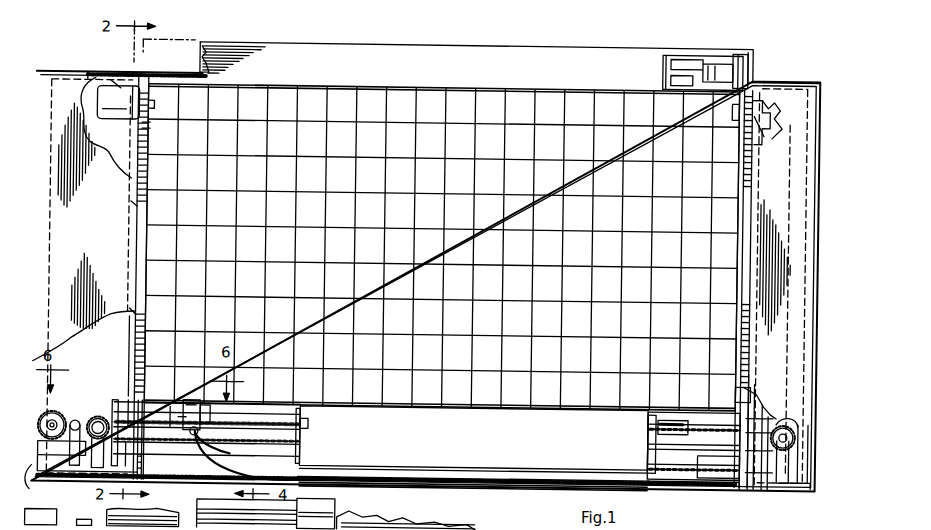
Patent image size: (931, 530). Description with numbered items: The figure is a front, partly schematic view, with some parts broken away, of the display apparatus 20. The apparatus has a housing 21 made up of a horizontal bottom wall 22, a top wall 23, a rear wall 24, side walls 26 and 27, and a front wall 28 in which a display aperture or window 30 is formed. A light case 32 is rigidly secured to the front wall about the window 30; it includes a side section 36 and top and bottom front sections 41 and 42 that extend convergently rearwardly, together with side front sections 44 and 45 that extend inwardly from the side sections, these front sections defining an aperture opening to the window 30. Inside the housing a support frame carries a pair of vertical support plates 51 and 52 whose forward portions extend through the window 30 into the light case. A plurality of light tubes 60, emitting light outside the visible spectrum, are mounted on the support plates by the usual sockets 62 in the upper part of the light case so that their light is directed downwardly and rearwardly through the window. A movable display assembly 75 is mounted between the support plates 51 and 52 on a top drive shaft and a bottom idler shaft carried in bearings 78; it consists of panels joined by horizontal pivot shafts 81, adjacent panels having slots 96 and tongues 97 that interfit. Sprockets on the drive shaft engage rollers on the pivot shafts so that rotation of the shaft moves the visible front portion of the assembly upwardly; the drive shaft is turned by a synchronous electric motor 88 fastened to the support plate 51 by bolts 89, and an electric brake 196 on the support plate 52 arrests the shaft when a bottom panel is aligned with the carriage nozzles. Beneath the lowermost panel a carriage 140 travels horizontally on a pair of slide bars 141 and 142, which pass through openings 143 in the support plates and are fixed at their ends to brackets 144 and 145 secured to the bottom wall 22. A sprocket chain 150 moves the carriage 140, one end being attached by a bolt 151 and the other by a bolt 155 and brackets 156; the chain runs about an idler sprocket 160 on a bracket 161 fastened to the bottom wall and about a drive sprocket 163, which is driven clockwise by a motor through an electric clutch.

The display apparatus 20 is at (553, 494).
The housing 21 is at (55, 72).
The bottom wall 22 is at (730, 484).
The top wall 23 is at (110, 78).
The rear wall 24 is at (86, 366).
The side wall 26 is at (39, 485).
The side wall 27 is at (818, 458).
The front wall 28 is at (486, 480).
The display window 30 is at (377, 97).
The light case 32 is at (594, 49).
The side section 36 is at (750, 66).
The top front section 41 is at (316, 52).
The bottom front section 42 is at (386, 418).
The side front section 44 is at (142, 228).
The side front section 45 is at (745, 176).
The vertical support plate 51 is at (138, 350).
The vertical support plate 52 is at (750, 382).
The light tubes 60 is at (712, 72).
The sockets 62 is at (741, 52).
The movable display assembly 75 is at (191, 100).
The bearings 78 is at (142, 458).
The horizontal pivot shafts 81 is at (511, 521).
The electric motor 88 is at (121, 124).
The bolts 89 is at (116, 164).
The slots 96 is at (372, 520).
The tongues 97 is at (338, 512).
The slide block 140 is at (190, 402).
The slide bar 141 is at (154, 404).
The slide bar 142 is at (305, 420).
The openings 143 is at (140, 402).
The bracket 144 is at (115, 462).
The bracket 145 is at (764, 468).
The sprocket chain 150 is at (274, 410).
The bolt 151 is at (176, 402).
The bolt 155 is at (207, 404).
The brackets 156 is at (197, 420).
The idler sprocket 160 is at (796, 426).
The bracket 161 is at (800, 440).
The drive sprocket 163 is at (98, 420).
The electric brake 196 is at (764, 120).